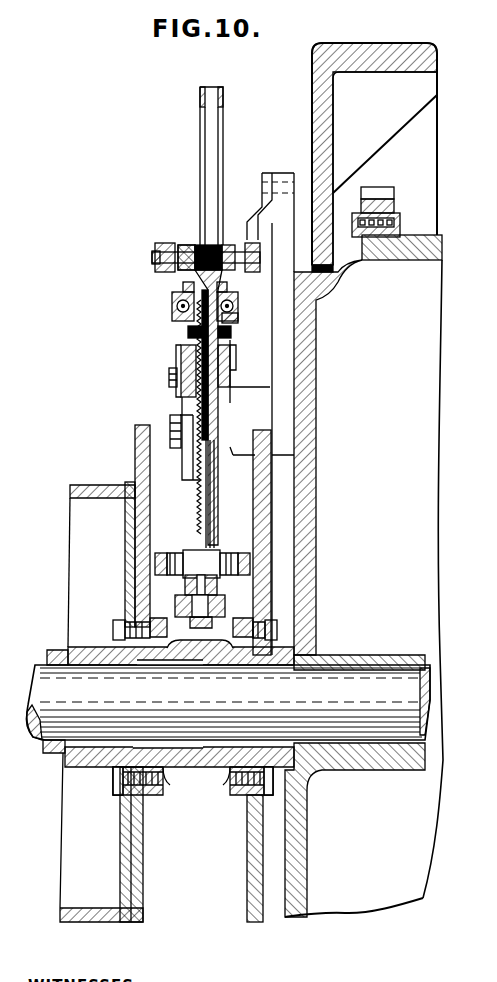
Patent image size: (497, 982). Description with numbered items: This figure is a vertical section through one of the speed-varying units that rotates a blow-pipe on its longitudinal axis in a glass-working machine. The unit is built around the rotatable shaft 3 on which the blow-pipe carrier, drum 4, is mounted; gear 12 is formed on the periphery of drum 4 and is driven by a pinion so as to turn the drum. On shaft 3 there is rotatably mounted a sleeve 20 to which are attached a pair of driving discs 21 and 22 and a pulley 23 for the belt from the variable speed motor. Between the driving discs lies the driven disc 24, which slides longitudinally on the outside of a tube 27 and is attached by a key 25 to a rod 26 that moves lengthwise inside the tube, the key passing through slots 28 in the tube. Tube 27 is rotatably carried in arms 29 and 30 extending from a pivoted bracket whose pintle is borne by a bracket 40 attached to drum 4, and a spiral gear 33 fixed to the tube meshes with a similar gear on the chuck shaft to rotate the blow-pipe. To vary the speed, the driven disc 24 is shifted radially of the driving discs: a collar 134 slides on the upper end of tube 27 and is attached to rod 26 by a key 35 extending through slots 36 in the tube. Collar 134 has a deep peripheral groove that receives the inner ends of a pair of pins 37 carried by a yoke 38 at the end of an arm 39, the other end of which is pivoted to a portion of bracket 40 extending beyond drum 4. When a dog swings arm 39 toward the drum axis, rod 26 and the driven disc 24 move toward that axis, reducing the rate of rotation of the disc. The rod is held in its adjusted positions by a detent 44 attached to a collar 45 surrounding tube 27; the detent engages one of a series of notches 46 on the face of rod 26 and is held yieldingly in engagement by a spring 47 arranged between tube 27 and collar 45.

The shaft 3 is at (50, 728).
The drum 4 is at (442, 240).
The gear 12 is at (385, 188).
The sleeve 20 is at (195, 767).
The driving disc 21 is at (122, 893).
The driving disc 22 is at (247, 883).
The pulley 23 is at (90, 922).
The driven disc 24 is at (138, 547).
The key 25 is at (222, 552).
The rod 26 is at (206, 526).
The tube 27 is at (220, 417).
The slots 28 is at (218, 520).
The arm 29 is at (225, 610).
The arm 30 is at (172, 318).
The spiral gear 33 is at (181, 372).
The key 35 is at (224, 245).
The slots 36 is at (223, 152).
The pins 37 is at (158, 262).
The yoke 38 is at (156, 246).
The arm 39 is at (263, 200).
The bracket 40 is at (289, 173).
The detent 44 is at (188, 335).
The collar 45 is at (231, 340).
The notches 46 is at (188, 403).
The spring 47 is at (234, 333).
The collar 134 is at (186, 245).